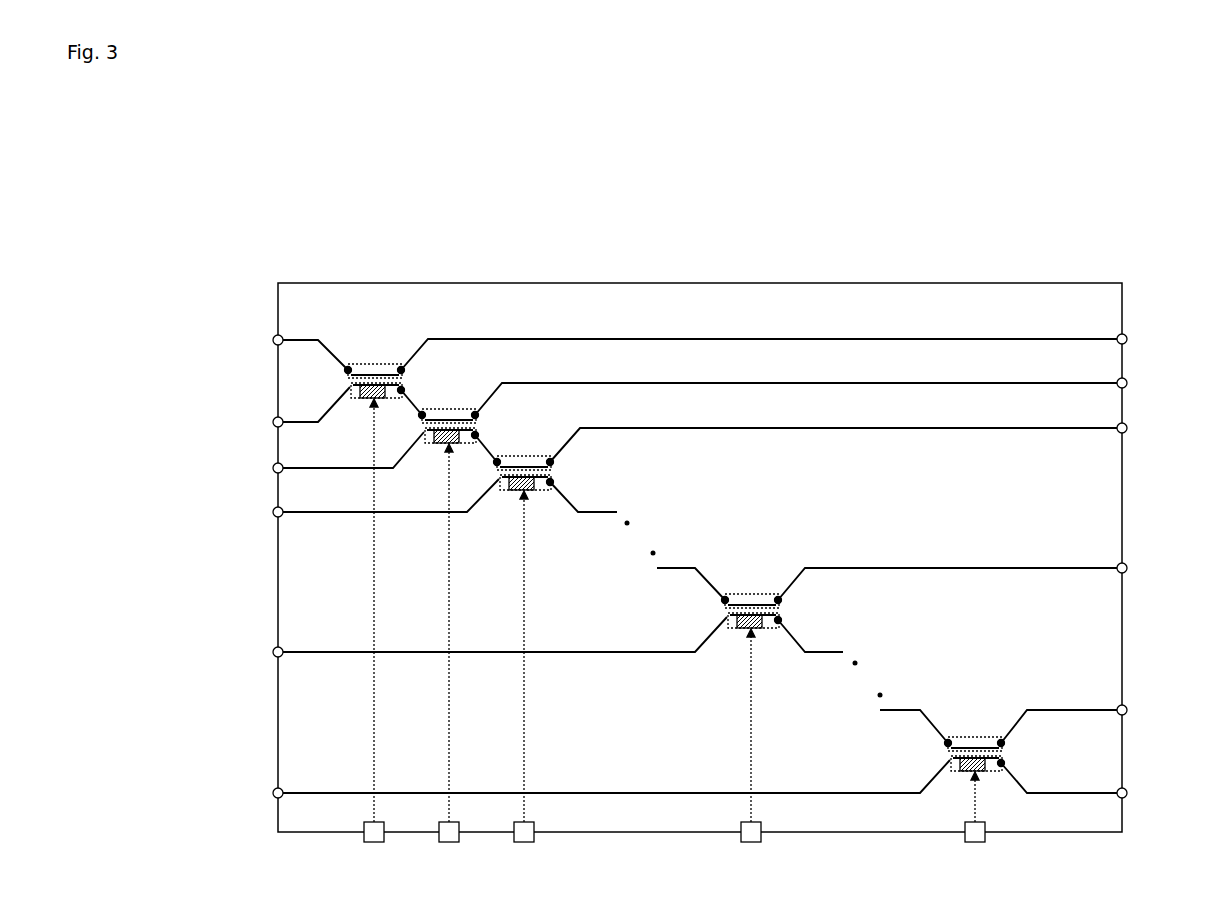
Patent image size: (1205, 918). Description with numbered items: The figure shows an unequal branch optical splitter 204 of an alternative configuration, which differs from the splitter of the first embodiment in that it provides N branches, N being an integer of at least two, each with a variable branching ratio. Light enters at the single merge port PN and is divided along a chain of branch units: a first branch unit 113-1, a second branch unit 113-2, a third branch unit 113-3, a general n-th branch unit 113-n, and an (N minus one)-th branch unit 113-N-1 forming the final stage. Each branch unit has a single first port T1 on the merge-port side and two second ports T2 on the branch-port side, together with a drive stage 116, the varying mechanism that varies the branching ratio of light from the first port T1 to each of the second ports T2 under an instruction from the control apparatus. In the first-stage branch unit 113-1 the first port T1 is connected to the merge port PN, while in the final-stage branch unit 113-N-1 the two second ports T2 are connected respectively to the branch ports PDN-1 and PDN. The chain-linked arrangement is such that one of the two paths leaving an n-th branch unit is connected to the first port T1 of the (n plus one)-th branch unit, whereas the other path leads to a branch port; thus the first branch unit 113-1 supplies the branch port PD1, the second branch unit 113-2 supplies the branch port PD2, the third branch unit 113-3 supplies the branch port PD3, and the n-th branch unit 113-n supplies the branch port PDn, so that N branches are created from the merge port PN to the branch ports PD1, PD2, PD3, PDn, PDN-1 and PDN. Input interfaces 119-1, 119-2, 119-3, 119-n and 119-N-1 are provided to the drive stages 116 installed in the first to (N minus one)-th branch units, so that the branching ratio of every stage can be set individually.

The unequal branch optical splitter 204 is at (601, 282).
The first branch unit 113-1 is at (385, 364).
The second branch unit 113-2 is at (460, 409).
The third branch unit 113-3 is at (535, 456).
The n-th branch unit 113-n is at (760, 594).
The (N−1)-th branch unit 113-N-1 is at (990, 737).
The drive stage 116 is at (362, 400).
The first port T1 is at (634, 560).
The second ports T2 is at (718, 567).
The input IF 119-1 is at (365, 843).
The input IF 119-2 is at (440, 843).
The input IF 119-3 is at (516, 843).
The input IF 119-n is at (743, 843).
The input IF 119-N-1 is at (967, 843).
The merge port PN is at (270, 322).
The first branch port PD1 is at (1137, 322).
The second branch port PD2 is at (1137, 367).
The third branch port PD3 is at (1137, 412).
The n-th branch port PDn is at (1136, 553).
The (N−1)-th branch port PDN-1 is at (1141, 696).
The N-th branch port PDN is at (1137, 777).